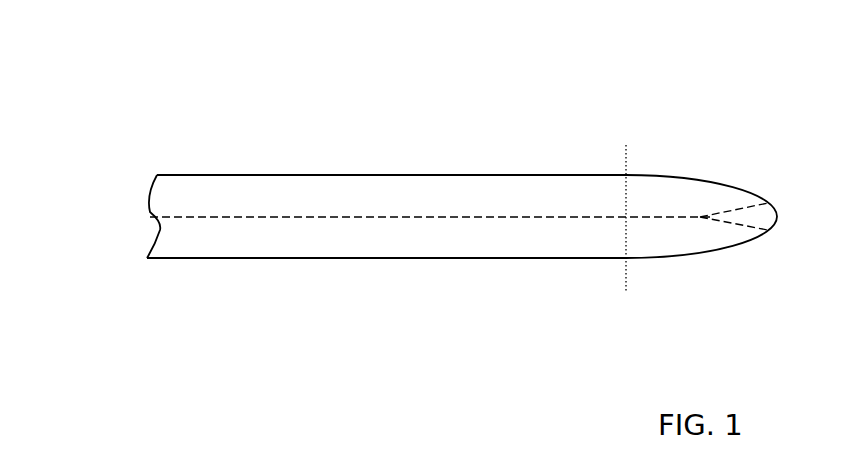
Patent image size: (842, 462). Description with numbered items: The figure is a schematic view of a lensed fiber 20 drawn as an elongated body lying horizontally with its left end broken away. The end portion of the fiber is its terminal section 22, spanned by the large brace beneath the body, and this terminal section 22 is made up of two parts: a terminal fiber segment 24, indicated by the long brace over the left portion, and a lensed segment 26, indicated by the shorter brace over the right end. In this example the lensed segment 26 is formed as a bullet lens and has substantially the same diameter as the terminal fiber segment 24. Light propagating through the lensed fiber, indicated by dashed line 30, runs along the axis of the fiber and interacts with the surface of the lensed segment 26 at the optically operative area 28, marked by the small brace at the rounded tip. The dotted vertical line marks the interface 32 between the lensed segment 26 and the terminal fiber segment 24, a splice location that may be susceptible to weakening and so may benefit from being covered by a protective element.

The lensed fiber 20 is at (95, 167).
The terminal section 22 is at (148, 318).
The terminal fiber segment 24 is at (625, 106).
The lensed segment 26 is at (770, 106).
The optically operative area 28 is at (786, 202).
The light propagating through the lensed fiber 30 is at (218, 217).
The interface 32 is at (627, 153).